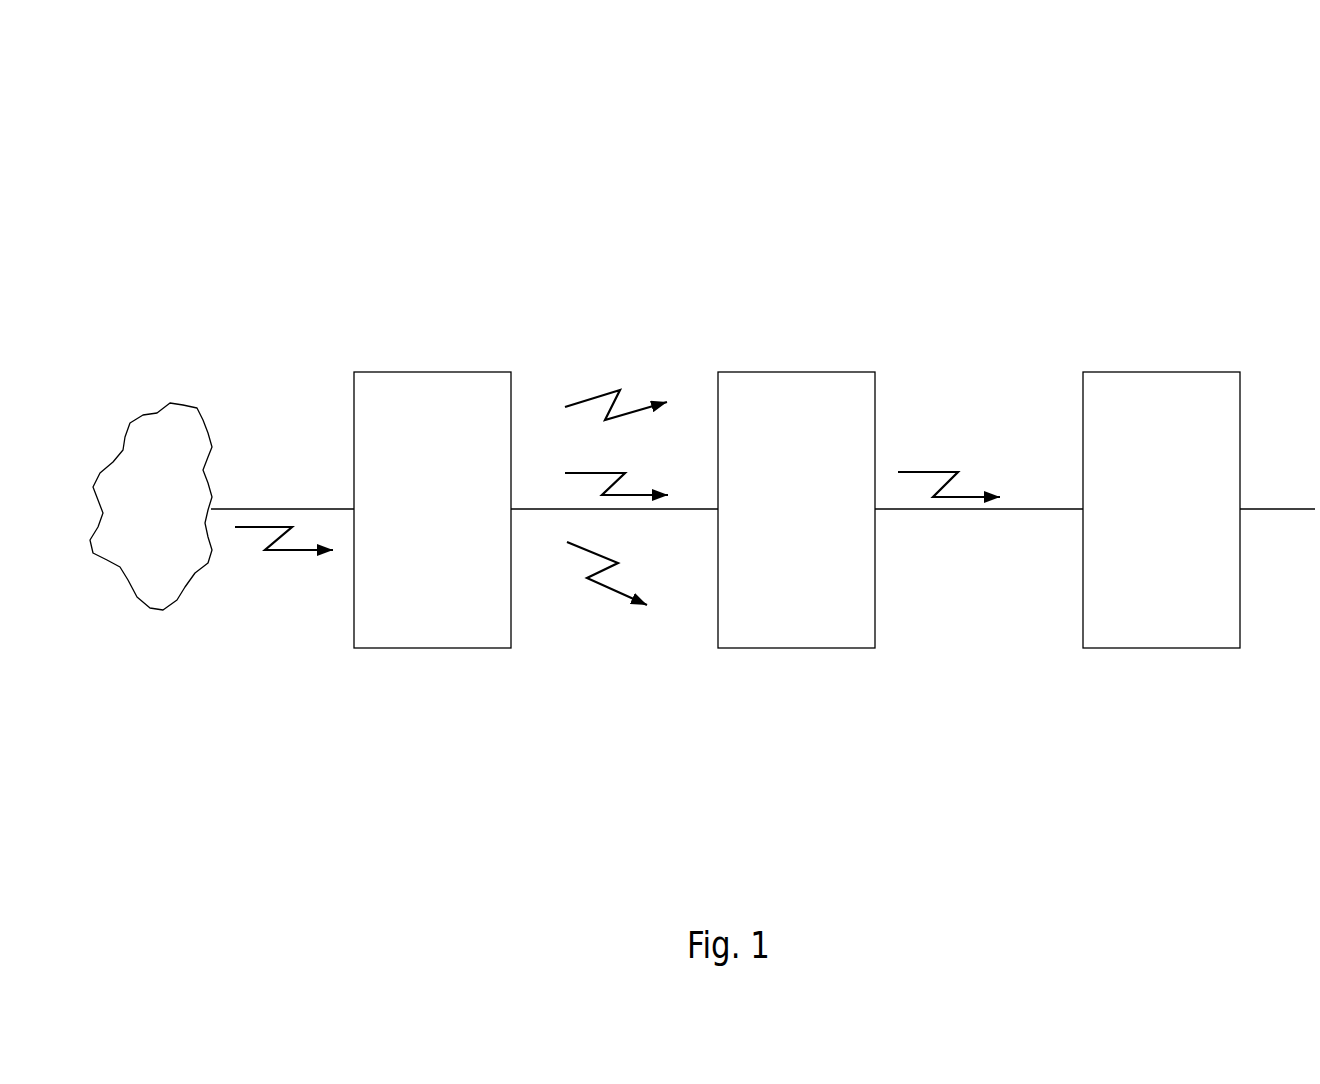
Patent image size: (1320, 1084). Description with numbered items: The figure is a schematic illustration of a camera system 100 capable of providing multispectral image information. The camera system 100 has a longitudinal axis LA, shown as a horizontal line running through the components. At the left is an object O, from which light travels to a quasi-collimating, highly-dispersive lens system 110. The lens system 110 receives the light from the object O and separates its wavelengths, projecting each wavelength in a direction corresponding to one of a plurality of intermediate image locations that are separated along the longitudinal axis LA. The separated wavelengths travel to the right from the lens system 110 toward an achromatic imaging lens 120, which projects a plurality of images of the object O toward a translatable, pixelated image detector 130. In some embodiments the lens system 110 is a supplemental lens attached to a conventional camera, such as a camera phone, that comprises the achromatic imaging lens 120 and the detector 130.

The camera system 100 is at (1061, 100).
The lens system 110 is at (435, 372).
The achromatic imaging lens 120 is at (798, 372).
The pixelated image detector 130 is at (1162, 372).
The object O is at (182, 402).
The longitudinal axis LA is at (1287, 507).